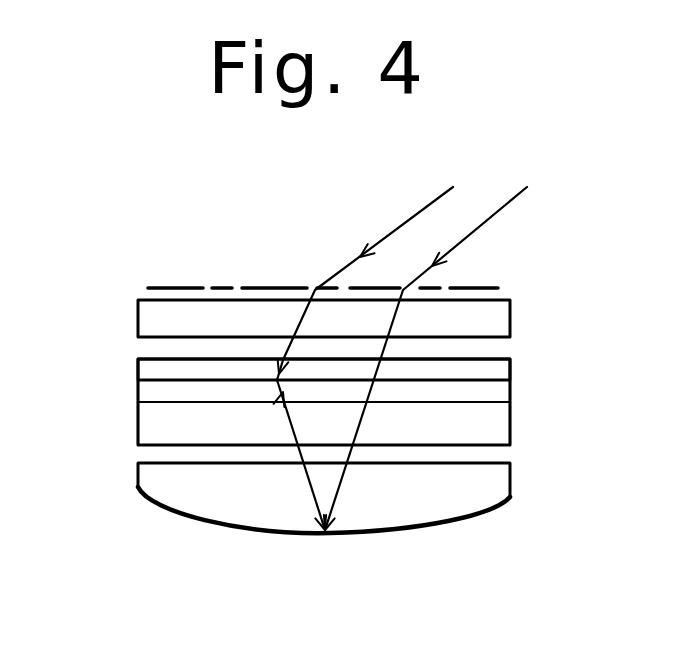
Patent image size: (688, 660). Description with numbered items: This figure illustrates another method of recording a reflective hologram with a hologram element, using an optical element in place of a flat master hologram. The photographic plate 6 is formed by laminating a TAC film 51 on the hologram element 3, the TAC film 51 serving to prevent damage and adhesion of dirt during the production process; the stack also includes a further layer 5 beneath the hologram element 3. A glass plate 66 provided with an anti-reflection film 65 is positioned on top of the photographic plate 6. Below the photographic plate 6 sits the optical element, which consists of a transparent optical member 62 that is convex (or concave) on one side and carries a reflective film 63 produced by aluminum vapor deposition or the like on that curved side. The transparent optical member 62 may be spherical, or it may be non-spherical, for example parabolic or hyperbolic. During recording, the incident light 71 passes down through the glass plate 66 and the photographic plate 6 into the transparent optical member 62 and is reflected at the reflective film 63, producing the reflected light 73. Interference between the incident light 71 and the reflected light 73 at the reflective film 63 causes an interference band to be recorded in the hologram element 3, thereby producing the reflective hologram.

The anti-reflection film 65 is at (483, 291).
The glass plate 66 is at (500, 322).
The photographic plate 6 is at (632, 338).
The TAC film 51 is at (498, 371).
The hologram element 3 is at (498, 393).
The light absorbing layer 5 is at (498, 425).
The transparent optical member 62 is at (467, 485).
The reflective film 63 is at (463, 517).
The incident light 71 is at (295, 325).
The reflected light 73 is at (297, 453).